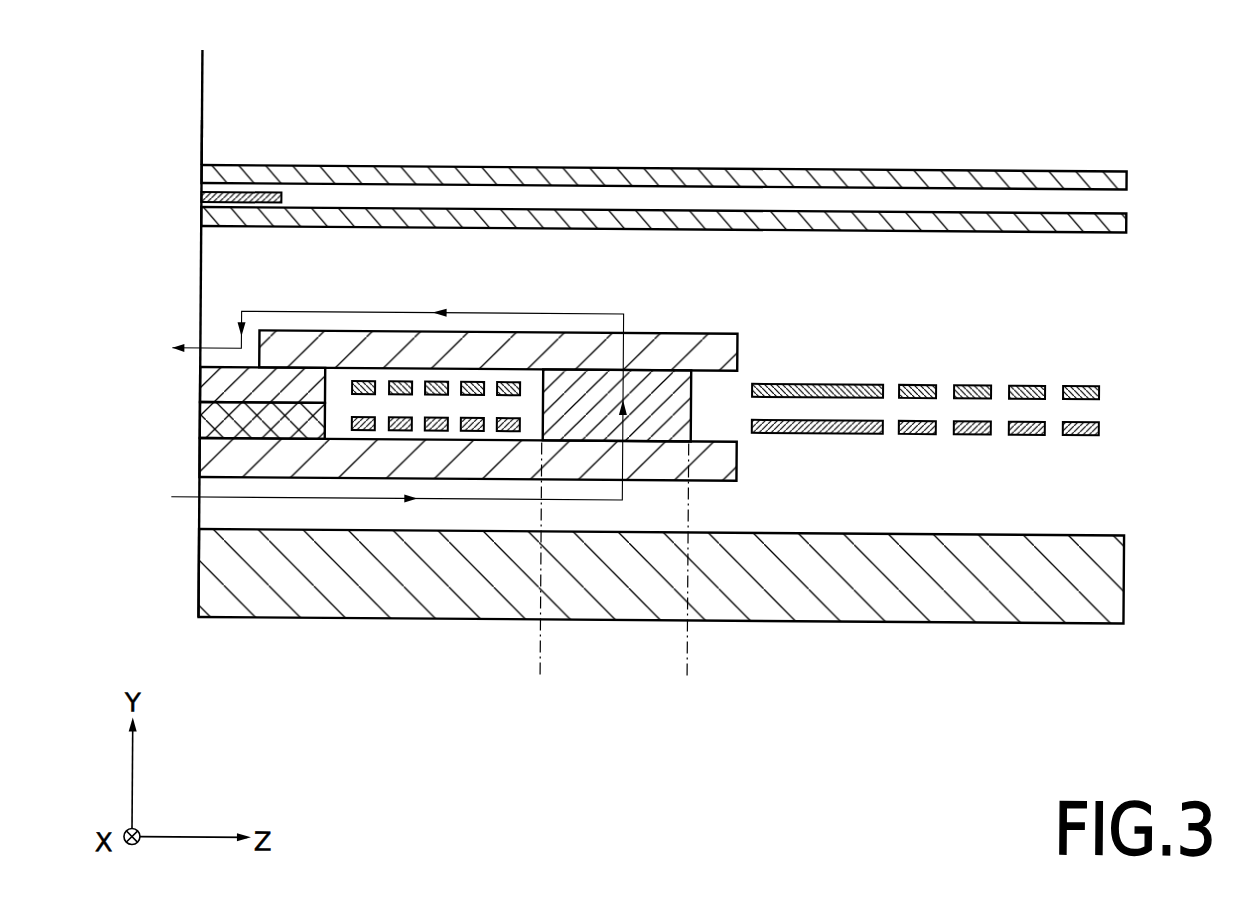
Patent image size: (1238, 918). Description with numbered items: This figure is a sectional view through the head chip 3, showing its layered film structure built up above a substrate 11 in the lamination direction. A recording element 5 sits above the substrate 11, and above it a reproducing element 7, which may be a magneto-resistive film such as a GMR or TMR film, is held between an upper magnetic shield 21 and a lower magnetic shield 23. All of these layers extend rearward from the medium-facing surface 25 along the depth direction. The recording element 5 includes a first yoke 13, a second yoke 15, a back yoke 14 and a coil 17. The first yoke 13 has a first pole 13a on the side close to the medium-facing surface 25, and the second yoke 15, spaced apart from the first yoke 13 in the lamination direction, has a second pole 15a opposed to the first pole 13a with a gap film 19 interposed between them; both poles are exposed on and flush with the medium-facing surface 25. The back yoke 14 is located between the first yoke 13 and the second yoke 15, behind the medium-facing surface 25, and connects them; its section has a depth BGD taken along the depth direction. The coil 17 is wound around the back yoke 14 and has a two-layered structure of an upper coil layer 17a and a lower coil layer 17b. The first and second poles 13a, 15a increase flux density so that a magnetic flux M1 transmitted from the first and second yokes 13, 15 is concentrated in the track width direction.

The head chip 3 is at (291, 77).
The medium-facing surface 25 is at (200, 137).
The reproducing element 7 is at (234, 203).
The upper magnetic shield 21 is at (313, 178).
The lower magnetic shield 23 is at (583, 224).
The second pole 15a is at (226, 383).
The recording element 5 is at (378, 354).
The magnetic flux M1 is at (519, 311).
The back yoke 14 is at (651, 402).
The second yoke 15 is at (716, 343).
The upper coil layer 17a is at (820, 426).
The lower coil layer 17b is at (1078, 386).
The gap film 19 is at (232, 420).
The first pole 13a is at (273, 457).
The coil 17 is at (449, 412).
The first yoke 13 is at (715, 460).
The substrate 11 is at (972, 588).
The depth of back yoke section BGD is at (687, 665).